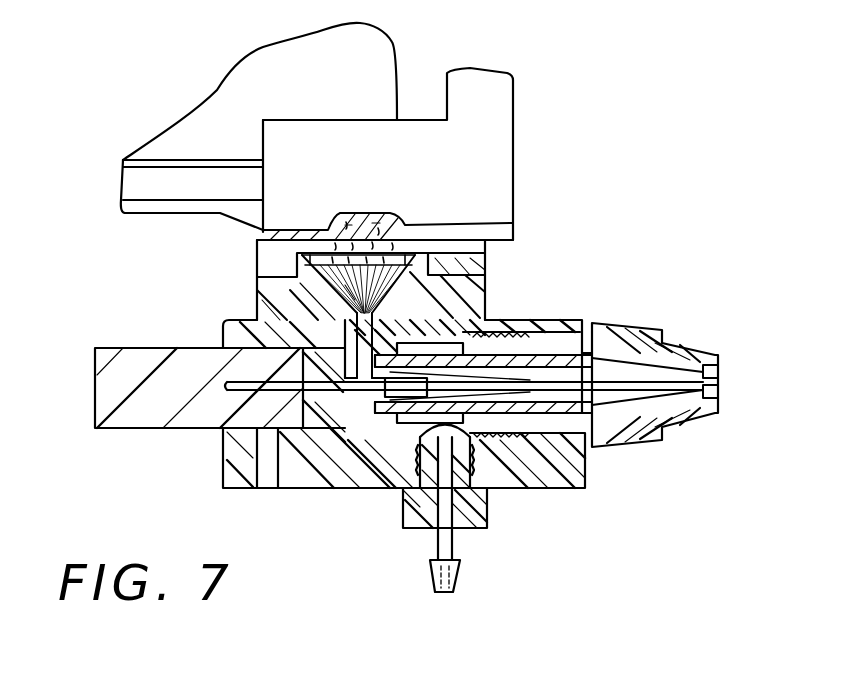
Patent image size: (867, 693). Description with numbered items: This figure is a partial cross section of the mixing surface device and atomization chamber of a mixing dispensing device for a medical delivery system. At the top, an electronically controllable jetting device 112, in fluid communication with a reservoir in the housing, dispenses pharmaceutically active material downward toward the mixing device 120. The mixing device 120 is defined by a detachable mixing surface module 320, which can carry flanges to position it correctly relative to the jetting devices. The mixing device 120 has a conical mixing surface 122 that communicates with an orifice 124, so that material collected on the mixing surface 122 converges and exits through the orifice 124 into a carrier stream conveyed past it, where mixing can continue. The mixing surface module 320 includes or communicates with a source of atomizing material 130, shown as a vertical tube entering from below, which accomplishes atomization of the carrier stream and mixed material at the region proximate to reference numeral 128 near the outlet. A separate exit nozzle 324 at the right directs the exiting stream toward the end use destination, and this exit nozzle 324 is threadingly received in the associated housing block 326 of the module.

The electronically controllable jetting device 112 is at (405, 223).
The mixing device 120 is at (393, 292).
The mixing surface 122 is at (432, 258).
The orifice 124 is at (252, 303).
The atomization region 128 is at (721, 368).
The source of atomizing material 130 is at (457, 545).
The mixing surface module 320 is at (537, 315).
The exit nozzle 324 is at (643, 443).
The housing block 326 is at (557, 482).